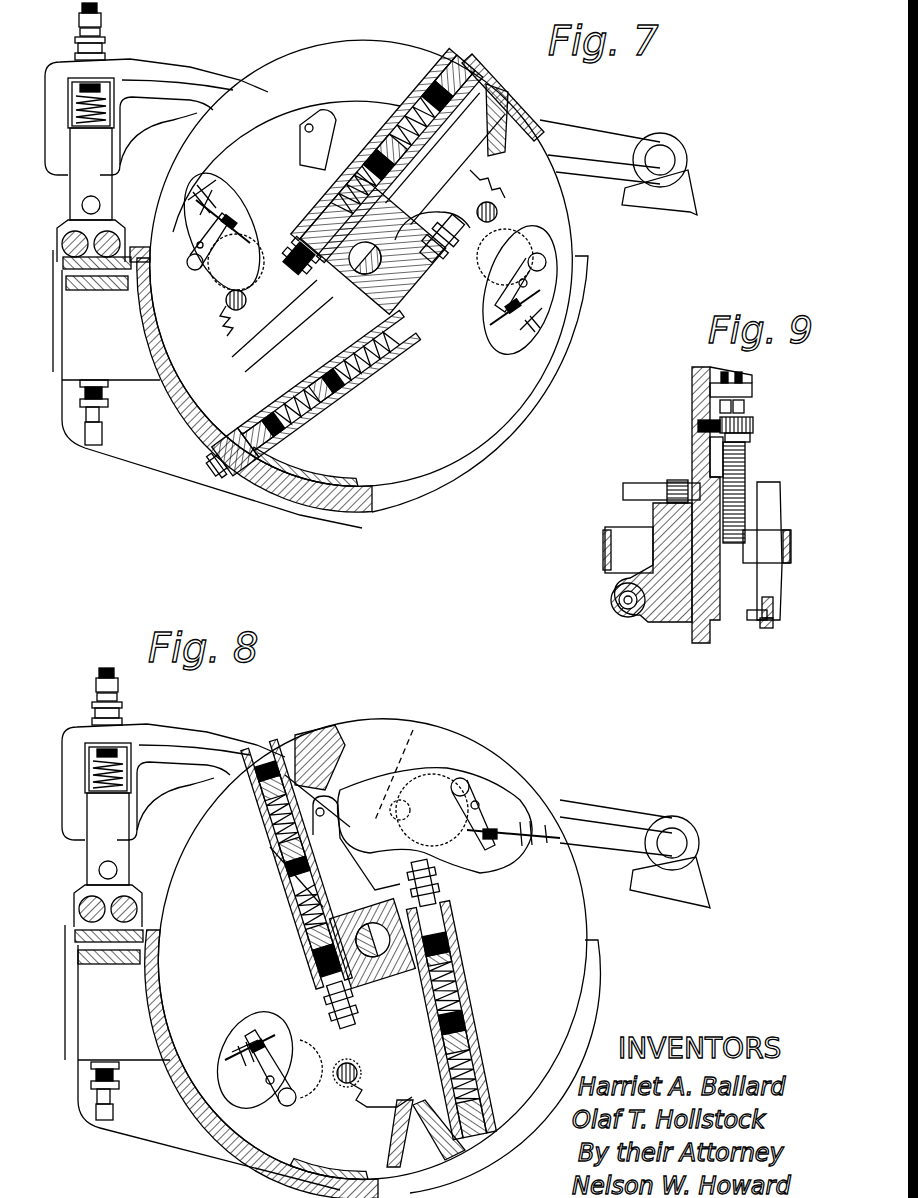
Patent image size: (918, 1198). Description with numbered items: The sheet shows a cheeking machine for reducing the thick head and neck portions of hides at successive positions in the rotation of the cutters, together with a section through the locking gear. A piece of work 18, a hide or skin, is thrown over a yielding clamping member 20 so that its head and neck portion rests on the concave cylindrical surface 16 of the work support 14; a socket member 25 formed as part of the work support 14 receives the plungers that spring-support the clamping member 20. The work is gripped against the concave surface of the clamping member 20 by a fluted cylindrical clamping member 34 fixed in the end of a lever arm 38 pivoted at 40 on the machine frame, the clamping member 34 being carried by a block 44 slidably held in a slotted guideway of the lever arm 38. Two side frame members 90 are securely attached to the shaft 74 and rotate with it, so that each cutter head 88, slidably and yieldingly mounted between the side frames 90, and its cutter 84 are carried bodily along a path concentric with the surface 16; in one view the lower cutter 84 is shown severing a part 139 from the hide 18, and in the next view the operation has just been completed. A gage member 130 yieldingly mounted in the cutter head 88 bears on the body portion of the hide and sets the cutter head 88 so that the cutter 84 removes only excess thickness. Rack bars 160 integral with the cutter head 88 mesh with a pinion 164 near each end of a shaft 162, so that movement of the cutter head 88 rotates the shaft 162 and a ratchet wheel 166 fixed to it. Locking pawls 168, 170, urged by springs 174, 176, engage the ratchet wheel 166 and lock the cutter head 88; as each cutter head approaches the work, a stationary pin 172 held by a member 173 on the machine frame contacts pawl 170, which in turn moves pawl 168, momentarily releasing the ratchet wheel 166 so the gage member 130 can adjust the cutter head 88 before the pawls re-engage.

In FIG. 7, the work support 14 is at (165, 390).
In FIG. 8, the work support 14 is at (165, 1042).
In FIG. 7, the concave cylindrical surface 16 is at (150, 346).
In FIG. 7, the piece of work 18 is at (148, 318).
In FIG. 8, the piece of work 18 is at (158, 1017).
In FIG. 7, the yielding clamping member 20 is at (97, 282).
In FIG. 8, the yielding clamping member 20 is at (112, 964).
In FIG. 7, the socket member 25 is at (122, 395).
In FIG. 8, the socket member 25 is at (145, 1060).
In FIG. 7, the cylindrical clamping member 34 is at (118, 222).
In FIG. 8, the cylindrical clamping member 34 is at (132, 905).
In FIG. 7, the lever arm 38 is at (150, 70).
In FIG. 8, the lever arm 38 is at (172, 745).
In FIG. 7, the pivot 40 is at (668, 155).
In FIG. 8, the pivot 40 is at (678, 840).
In FIG. 8, the block 44 is at (118, 855).
In FIG. 7, the shaft 74 is at (372, 243).
In FIG. 8, the shaft 74 is at (373, 944).
In FIG. 7, the cutter 84 is at (380, 266).
In FIG. 8, the cutter 84 is at (388, 929).
In FIG. 7, the cutter head 88 is at (215, 412).
In FIG. 9, the cutter head 88 is at (684, 612).
In FIG. 8, the cutter head 88 is at (325, 745).
In FIG. 7, the side frame member 90 is at (572, 233).
In FIG. 9, the side frame member 90 is at (703, 643).
In FIG. 8, the side frame member 90 is at (572, 915).
In FIG. 7, the gage member 130 is at (262, 470).
In FIG. 8, the gage member 130 is at (262, 745).
In FIG. 7, the part severed from the hide 139 is at (250, 382).
In FIG. 7, the rack bar 160 is at (236, 324).
In FIG. 8, the rack bar 160 is at (365, 1120).
In FIG. 9, the shaft 162 is at (640, 487).
In FIG. 8, the shaft 162 is at (355, 1085).
In FIG. 7, the pinion 164 is at (250, 292).
In FIG. 9, the pinion 164 is at (675, 483).
In FIG. 8, the pinion 164 is at (357, 1073).
In FIG. 7, the ratchet wheel 166 is at (252, 248).
In FIG. 9, the ratchet wheel 166 is at (746, 470).
In FIG. 8, the ratchet wheel 166 is at (430, 795).
In FIG. 7, the locking pawl 168 is at (240, 238).
In FIG. 9, the locking pawl 168 is at (700, 427).
In FIG. 8, the locking pawl 168 is at (500, 842).
In FIG. 7, the locking pawl 170 is at (235, 238).
In FIG. 9, the locking pawl 170 is at (752, 441).
In FIG. 8, the locking pawl 170 is at (470, 855).
In FIG. 7, the pin 172 is at (318, 118).
In FIG. 9, the pin 172 is at (753, 622).
In FIG. 7, the supporting member 173 is at (320, 150).
In FIG. 9, the supporting member 173 is at (770, 630).
In FIG. 9, the spring 174 is at (716, 407).
In FIG. 7, the spring 176 is at (222, 220).
In FIG. 9, the spring 176 is at (746, 409).
In FIG. 8, the spring 176 is at (505, 830).